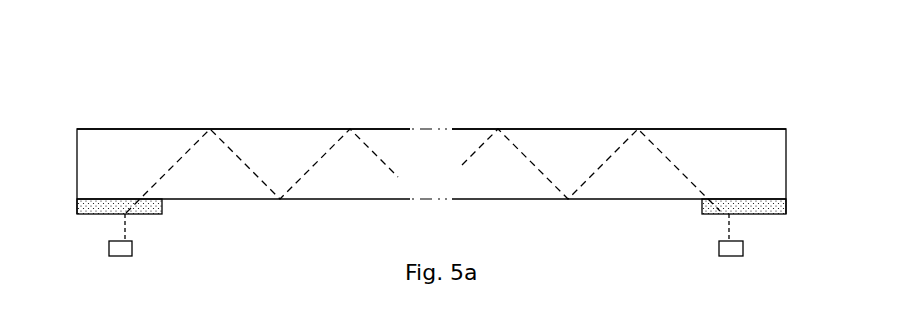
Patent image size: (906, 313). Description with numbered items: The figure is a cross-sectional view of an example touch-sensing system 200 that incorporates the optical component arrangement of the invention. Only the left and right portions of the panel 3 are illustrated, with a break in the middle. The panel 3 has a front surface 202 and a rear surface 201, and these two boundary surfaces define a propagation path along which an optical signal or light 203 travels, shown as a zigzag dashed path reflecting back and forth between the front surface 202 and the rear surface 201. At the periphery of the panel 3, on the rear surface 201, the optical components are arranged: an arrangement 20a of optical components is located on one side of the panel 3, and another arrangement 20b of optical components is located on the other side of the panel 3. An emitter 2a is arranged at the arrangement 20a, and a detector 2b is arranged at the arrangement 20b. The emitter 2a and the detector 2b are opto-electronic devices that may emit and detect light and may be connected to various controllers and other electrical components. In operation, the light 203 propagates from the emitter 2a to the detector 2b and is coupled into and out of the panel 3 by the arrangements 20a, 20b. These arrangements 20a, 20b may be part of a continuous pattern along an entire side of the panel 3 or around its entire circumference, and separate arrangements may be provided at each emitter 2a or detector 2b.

The touch-sensing system 200 is at (431, 176).
The panel 3 is at (137, 145).
The front surface 202 is at (266, 129).
The rear surface 201 is at (244, 200).
The light 203 is at (190, 140).
The arrangement of optical components 20a is at (146, 214).
The arrangement of optical components 20b is at (702, 214).
The emitter 2a is at (112, 257).
The detector 2b is at (721, 257).